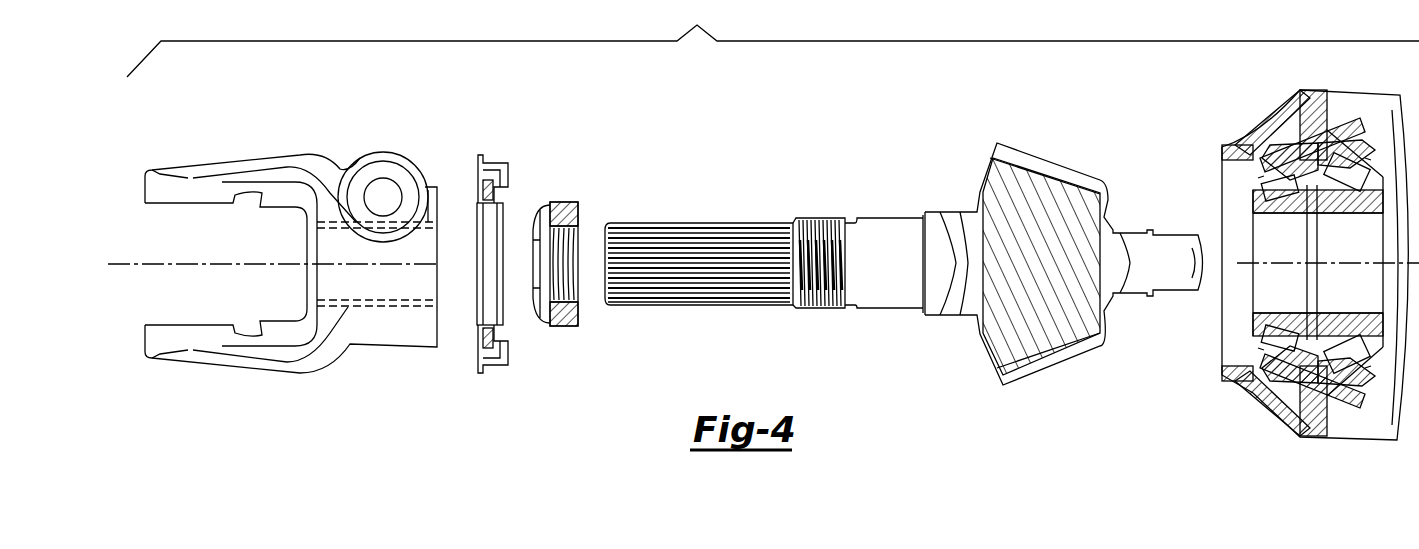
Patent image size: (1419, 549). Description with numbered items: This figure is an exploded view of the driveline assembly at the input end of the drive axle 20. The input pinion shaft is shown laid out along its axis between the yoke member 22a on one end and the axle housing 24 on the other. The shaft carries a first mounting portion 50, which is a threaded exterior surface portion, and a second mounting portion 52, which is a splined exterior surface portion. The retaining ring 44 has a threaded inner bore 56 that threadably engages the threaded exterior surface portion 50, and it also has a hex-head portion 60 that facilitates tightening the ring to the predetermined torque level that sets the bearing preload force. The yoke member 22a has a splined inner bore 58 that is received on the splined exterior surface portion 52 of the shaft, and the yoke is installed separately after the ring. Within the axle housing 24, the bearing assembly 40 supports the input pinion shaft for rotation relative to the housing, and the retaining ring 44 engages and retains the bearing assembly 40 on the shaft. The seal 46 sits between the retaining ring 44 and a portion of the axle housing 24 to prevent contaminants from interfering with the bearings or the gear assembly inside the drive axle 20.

The drive axle 20 is at (1126, 276).
The yoke member 22a is at (263, 173).
The axle housing 24 is at (1305, 430).
The bearing assembly 40 is at (1255, 323).
The retaining ring 44 is at (581, 239).
The seal 46 is at (493, 367).
The first mounting portion 50 is at (831, 223).
The second mounting portion 52 is at (742, 230).
The threaded inner bore 56 is at (582, 290).
The splined inner bore 58 is at (377, 285).
The hex-head portion 60 is at (533, 212).